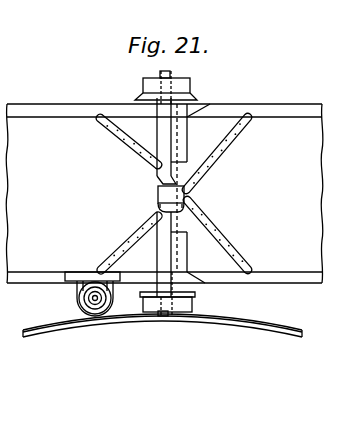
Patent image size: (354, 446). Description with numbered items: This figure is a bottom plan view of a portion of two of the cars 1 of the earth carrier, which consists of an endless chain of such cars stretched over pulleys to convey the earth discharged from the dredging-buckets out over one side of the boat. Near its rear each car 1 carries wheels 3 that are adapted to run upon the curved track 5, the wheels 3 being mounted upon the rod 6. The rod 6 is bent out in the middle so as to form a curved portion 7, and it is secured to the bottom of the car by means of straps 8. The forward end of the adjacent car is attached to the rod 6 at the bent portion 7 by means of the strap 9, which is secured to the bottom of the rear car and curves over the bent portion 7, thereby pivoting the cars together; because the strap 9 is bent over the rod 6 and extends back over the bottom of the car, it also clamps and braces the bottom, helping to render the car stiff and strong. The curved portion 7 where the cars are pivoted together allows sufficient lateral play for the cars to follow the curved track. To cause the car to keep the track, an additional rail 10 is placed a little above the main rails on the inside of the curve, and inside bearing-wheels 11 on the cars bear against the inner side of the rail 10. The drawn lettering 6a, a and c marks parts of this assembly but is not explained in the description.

The car 1 is at (92, 294).
The wheel 3 is at (170, 193).
The track 5 is at (138, 157).
The rod 6 is at (163, 129).
The diagonal brace 6a is at (222, 151).
The curved portion 7 is at (186, 200).
The strap 8 is at (148, 170).
The strap 9 is at (194, 215).
The additional rail 10 is at (222, 351).
The inside bearing-wheel 11 is at (86, 320).
The post bar a is at (157, 254).
The brace centre line c is at (208, 168).